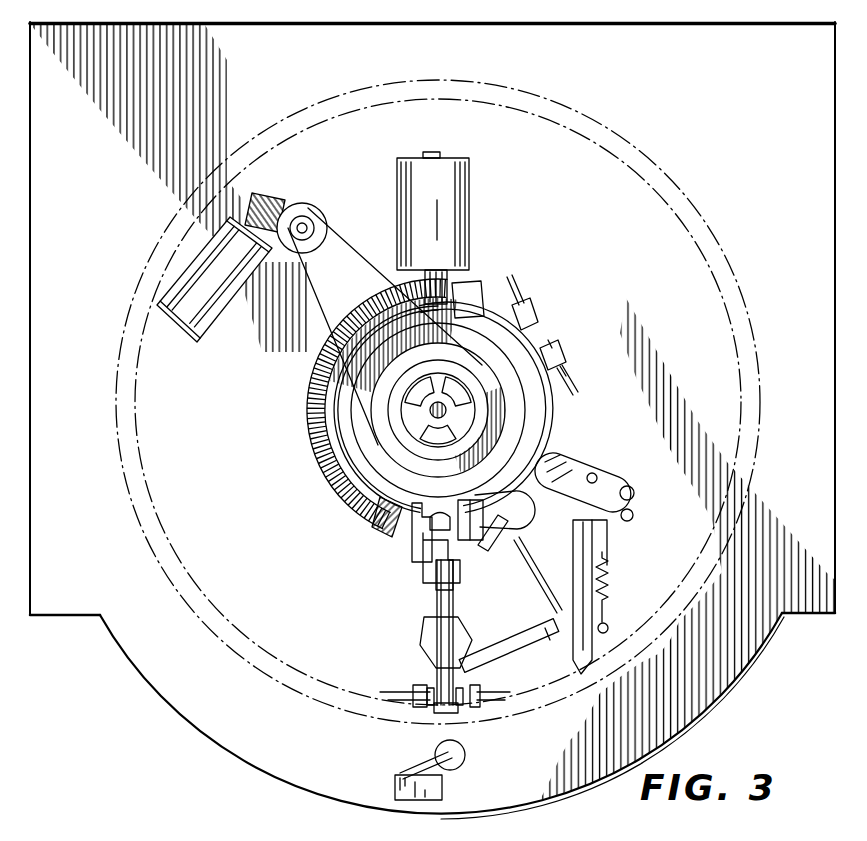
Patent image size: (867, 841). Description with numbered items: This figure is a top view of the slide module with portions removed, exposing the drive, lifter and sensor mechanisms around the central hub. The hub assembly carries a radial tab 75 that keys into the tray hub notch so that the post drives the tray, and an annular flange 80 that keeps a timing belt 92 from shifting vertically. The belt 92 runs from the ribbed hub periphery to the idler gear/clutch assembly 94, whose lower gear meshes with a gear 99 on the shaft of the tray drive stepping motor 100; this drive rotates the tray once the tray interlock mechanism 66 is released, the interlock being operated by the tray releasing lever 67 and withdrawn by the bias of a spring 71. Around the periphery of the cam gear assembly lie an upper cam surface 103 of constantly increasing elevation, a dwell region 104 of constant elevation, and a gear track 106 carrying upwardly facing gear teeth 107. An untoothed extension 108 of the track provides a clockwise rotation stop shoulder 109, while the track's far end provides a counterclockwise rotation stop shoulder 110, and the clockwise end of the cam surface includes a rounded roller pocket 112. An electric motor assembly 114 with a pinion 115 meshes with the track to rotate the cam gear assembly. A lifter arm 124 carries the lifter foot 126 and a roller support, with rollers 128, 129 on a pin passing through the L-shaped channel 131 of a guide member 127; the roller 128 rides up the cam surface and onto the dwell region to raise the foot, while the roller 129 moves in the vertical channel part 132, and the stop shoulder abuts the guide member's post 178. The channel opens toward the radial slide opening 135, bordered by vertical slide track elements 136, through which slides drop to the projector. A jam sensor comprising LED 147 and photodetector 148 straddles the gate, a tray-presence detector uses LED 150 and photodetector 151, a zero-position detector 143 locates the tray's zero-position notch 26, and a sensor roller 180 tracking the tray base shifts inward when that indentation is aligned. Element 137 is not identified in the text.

The zero-position notch 26 is at (278, 698).
The tray interlock mechanism 66 is at (622, 546).
The tray releasing lever 67 is at (608, 627).
The spring 71 is at (609, 580).
The radial tab 75 is at (478, 360).
The annular flange 80 is at (537, 405).
The timing belt 92 is at (350, 290).
The idler gear/clutch assembly 94 is at (325, 215).
The gear 99 is at (262, 203).
The tray drive stepping motor 100 is at (243, 297).
The upper cam surface 103 is at (540, 426).
The dwell region 104 is at (560, 350).
The gear track 106 is at (325, 448).
The gear teeth 107 is at (338, 492).
The untoothed extension 108 is at (478, 292).
The clockwise rotation stop shoulder 109 is at (507, 279).
The counterclockwise rotation stop shoulder 110 is at (412, 540).
The rounded roller pocket 112 is at (527, 502).
The electric motor assembly 114 is at (397, 190).
The pinion 115 is at (424, 270).
The lifter arm 124 is at (550, 560).
The lifter foot 126 is at (512, 655).
The guide member 127 is at (455, 570).
The roller 128 is at (570, 460).
The roller 129 is at (494, 546).
The L-shaped channel 131 is at (423, 570).
The vertical channel part 132 is at (372, 522).
The slide opening 135 is at (456, 608).
The slide track elements 136 is at (433, 604).
The clamp 137 is at (425, 712).
The zero-position detector 143 is at (396, 790).
The LED 147 is at (417, 688).
The photodetector 148 is at (462, 712).
The LED 150 is at (540, 320).
The photodetector 151 is at (566, 362).
The post 178 is at (428, 530).
The roller 180 is at (463, 770).